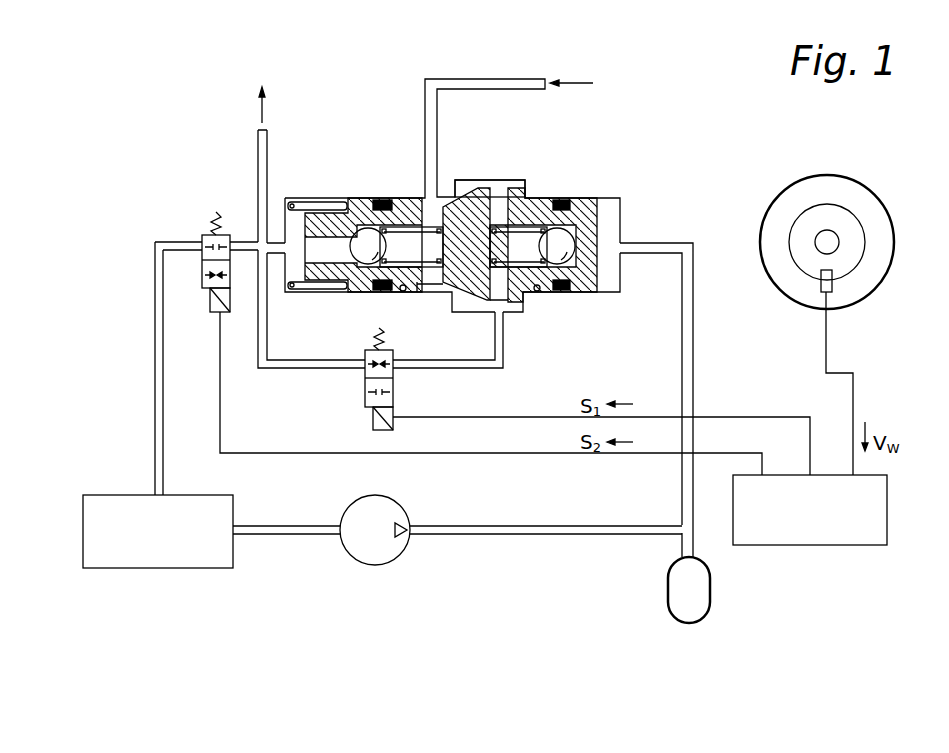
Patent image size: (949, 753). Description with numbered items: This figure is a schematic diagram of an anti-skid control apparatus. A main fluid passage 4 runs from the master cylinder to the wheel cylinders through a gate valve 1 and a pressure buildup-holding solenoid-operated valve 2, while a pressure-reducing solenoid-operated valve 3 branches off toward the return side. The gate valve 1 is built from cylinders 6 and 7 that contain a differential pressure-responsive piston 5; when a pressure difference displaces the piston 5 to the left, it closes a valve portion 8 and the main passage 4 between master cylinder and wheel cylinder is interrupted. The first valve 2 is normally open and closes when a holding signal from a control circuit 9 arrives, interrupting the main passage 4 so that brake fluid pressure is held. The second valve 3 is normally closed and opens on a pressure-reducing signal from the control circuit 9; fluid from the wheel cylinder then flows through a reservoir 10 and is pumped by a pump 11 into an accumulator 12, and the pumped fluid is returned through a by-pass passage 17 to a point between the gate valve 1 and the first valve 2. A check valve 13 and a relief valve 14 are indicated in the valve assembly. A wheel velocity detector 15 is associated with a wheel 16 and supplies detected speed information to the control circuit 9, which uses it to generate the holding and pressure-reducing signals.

The gate valve 1 is at (495, 180).
The pressure buildup-holding solenoid-operated valve 2 is at (365, 392).
The pressure-reducing solenoid-operated valve 3 is at (200, 237).
The main fluid passage 4 is at (497, 78).
The differential pressure-responsive piston 5 is at (540, 198).
The cylinder 6 is at (538, 297).
The cylinder 7 is at (405, 291).
The valve portion 8 is at (463, 190).
The control circuit 9 is at (825, 547).
The reservoir 10 is at (233, 510).
The pump 11 is at (407, 512).
The accumulator 12 is at (668, 592).
The check valve 13 is at (586, 243).
The relief valve 14 is at (366, 222).
The wheel velocity detector 15 is at (834, 286).
The wheel 16 is at (884, 220).
The by-pass passage 17 is at (163, 388).